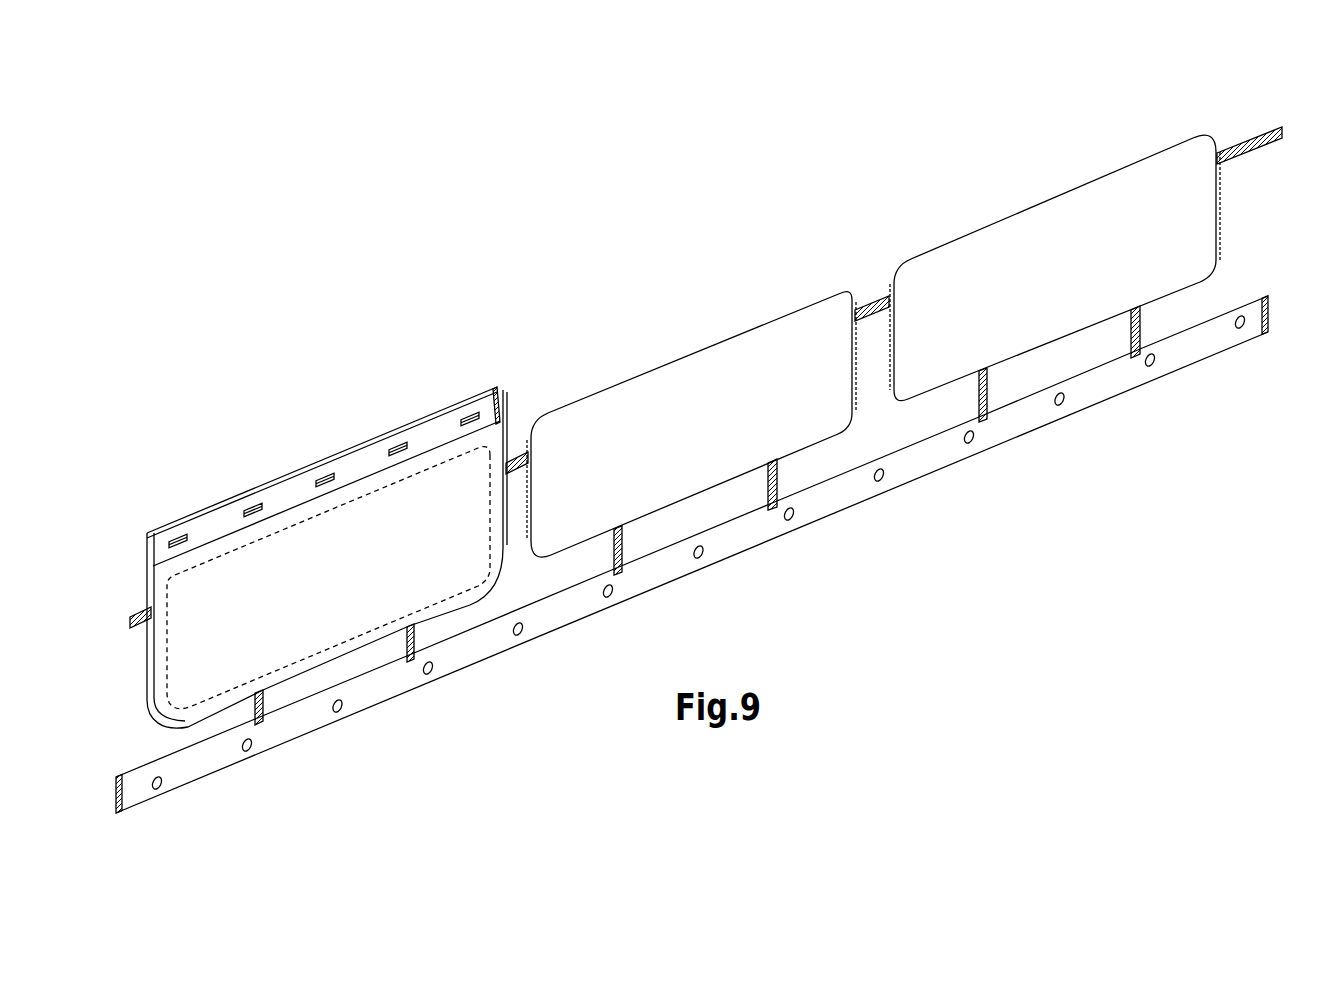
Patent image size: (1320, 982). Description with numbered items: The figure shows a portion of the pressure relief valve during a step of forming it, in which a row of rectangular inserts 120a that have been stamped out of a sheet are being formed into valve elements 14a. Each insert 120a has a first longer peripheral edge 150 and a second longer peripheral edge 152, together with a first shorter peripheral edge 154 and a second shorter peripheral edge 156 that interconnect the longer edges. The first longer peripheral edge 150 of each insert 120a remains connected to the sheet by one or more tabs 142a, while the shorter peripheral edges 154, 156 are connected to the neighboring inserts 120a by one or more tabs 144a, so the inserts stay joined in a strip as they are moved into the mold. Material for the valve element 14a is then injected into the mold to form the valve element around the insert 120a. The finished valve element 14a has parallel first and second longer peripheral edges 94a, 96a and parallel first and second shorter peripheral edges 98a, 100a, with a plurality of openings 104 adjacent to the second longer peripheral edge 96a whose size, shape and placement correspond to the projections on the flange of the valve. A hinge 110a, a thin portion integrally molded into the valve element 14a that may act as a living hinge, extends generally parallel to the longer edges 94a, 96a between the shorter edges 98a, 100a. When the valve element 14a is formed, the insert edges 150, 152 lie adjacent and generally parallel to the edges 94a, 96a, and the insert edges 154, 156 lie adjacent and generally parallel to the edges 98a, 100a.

The valve element 14a is at (330, 560).
The first longer peripheral edge 94a is at (356, 658).
The second longer peripheral edge 96a is at (220, 522).
The first shorter peripheral edge 98a is at (148, 682).
The second shorter peripheral edge 100a is at (504, 392).
The openings 104 is at (396, 441).
The hinge 110a is at (207, 540).
The insert 120a is at (410, 492).
The tabs 142a is at (260, 718).
The tabs 144a is at (140, 610).
The first longer peripheral edge 150 is at (718, 492).
The second longer peripheral edge 152 is at (638, 380).
The first shorter peripheral edge 154 is at (520, 437).
The second shorter peripheral edge 156 is at (854, 296).